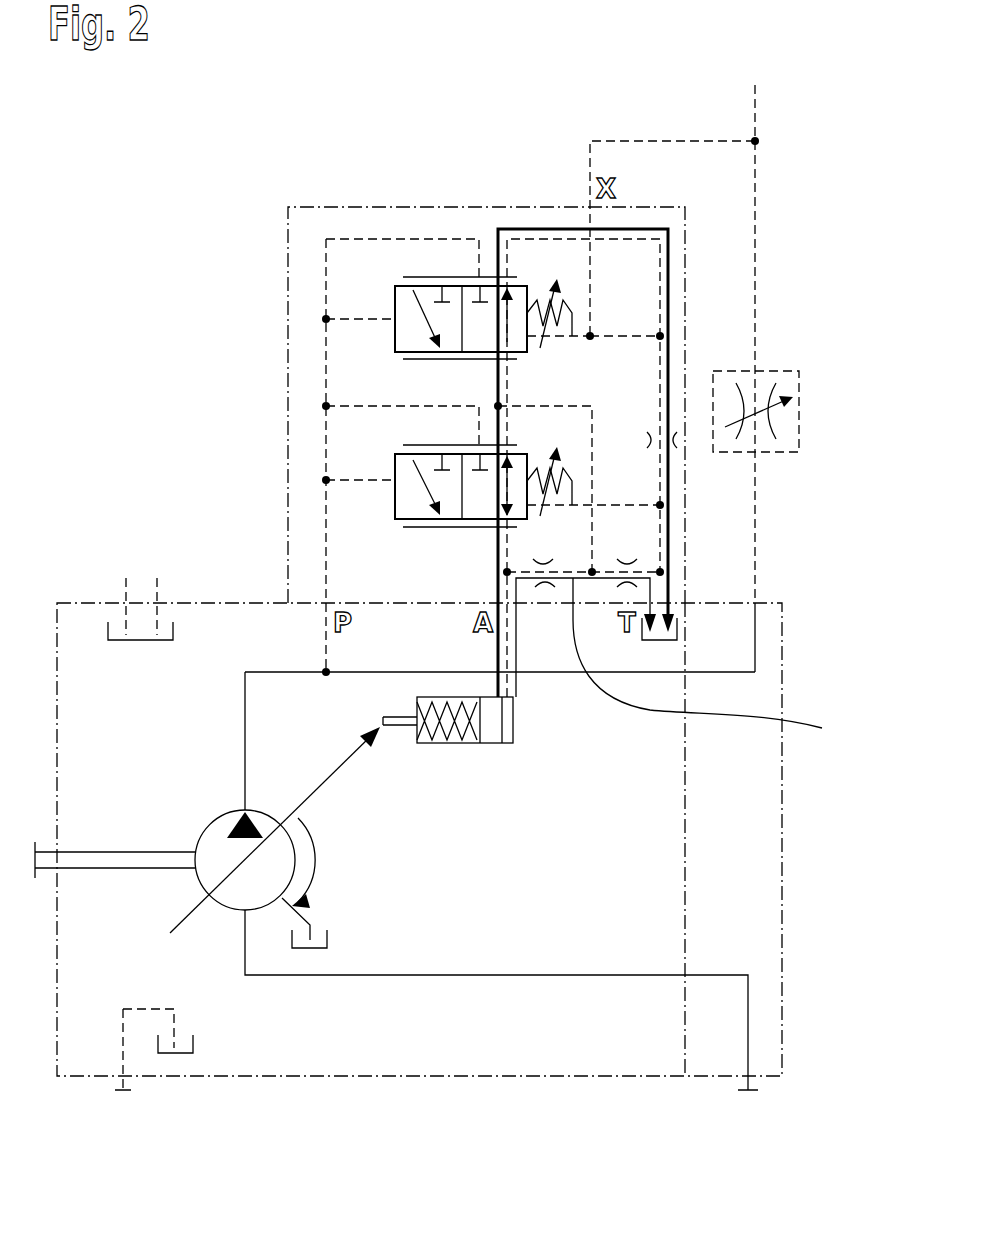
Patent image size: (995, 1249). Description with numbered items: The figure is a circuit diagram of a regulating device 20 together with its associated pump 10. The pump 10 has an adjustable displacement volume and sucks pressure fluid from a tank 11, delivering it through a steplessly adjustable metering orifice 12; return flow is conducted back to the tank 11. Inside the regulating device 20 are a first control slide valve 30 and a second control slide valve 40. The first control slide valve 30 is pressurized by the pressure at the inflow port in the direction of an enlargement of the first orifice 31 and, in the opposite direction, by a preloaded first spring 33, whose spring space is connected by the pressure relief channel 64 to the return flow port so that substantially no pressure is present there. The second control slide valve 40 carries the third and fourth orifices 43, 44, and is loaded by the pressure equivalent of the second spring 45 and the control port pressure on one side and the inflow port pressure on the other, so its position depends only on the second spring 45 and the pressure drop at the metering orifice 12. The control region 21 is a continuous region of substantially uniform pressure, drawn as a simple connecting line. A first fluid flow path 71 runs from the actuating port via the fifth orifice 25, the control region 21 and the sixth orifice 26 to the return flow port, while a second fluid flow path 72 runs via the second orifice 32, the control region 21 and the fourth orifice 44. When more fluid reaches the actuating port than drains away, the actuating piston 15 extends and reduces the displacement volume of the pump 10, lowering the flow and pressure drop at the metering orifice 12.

The pump 10 is at (277, 858).
The tank 11 is at (660, 640).
The metering orifice 12 is at (770, 427).
The actuating piston 15 is at (497, 730).
The regulating device 20 is at (288, 245).
The control region 21 is at (505, 402).
The fifth orifice 25 is at (545, 578).
The sixth orifice 26 is at (623, 560).
The first control slide valve 30 is at (395, 492).
The first orifice 31 is at (395, 468).
The second orifice 32 is at (500, 490).
The first spring 33 is at (568, 478).
The second control slide valve 40 is at (395, 332).
The third orifice 43 is at (427, 320).
The fourth orifice 44 is at (508, 332).
The second spring 45 is at (563, 317).
The pressure relief channel 64 is at (620, 505).
The first fluid flow path 71 is at (718, 658).
The second fluid flow path 72 is at (668, 277).